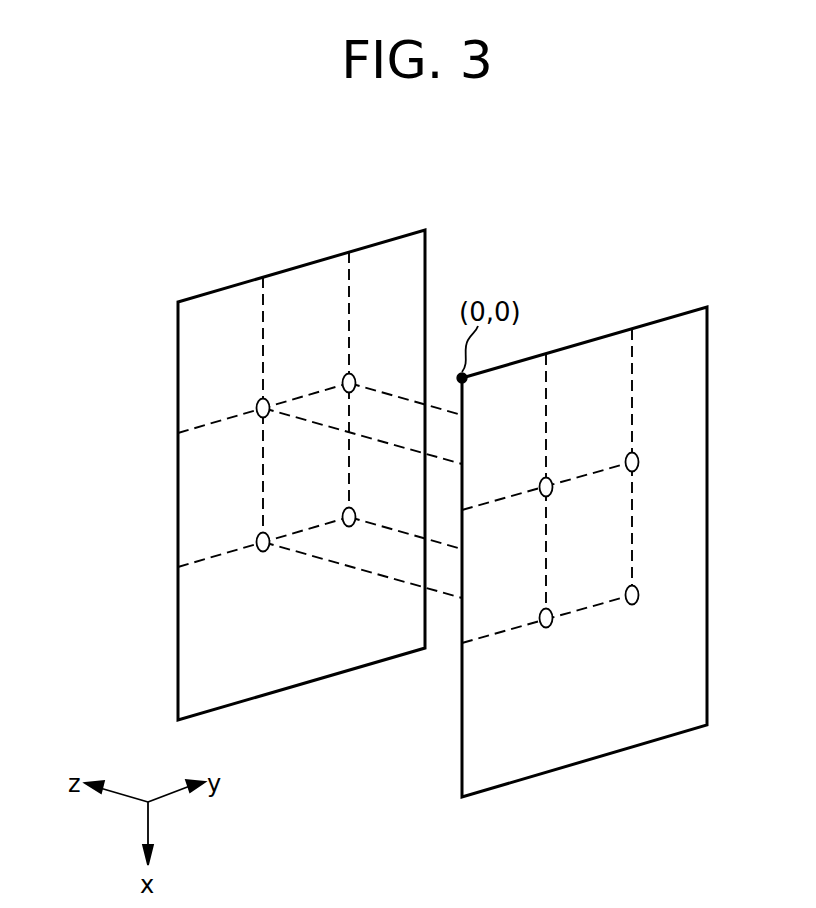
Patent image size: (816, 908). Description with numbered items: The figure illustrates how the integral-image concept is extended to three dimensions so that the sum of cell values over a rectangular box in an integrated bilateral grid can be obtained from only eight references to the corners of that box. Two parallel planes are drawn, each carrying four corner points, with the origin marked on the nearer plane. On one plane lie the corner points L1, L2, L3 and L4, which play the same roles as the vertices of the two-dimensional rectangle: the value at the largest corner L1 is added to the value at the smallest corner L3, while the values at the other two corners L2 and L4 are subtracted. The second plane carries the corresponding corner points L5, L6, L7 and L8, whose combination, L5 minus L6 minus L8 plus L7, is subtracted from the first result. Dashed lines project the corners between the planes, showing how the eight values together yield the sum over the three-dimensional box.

The corner point L1 is at (637, 590).
The corner point L2 is at (636, 456).
The corner point L3 is at (550, 481).
The corner point L4 is at (550, 612).
The corner point L5 is at (353, 511).
The corner point L6 is at (353, 377).
The corner point L7 is at (267, 402).
The corner point L8 is at (267, 536).